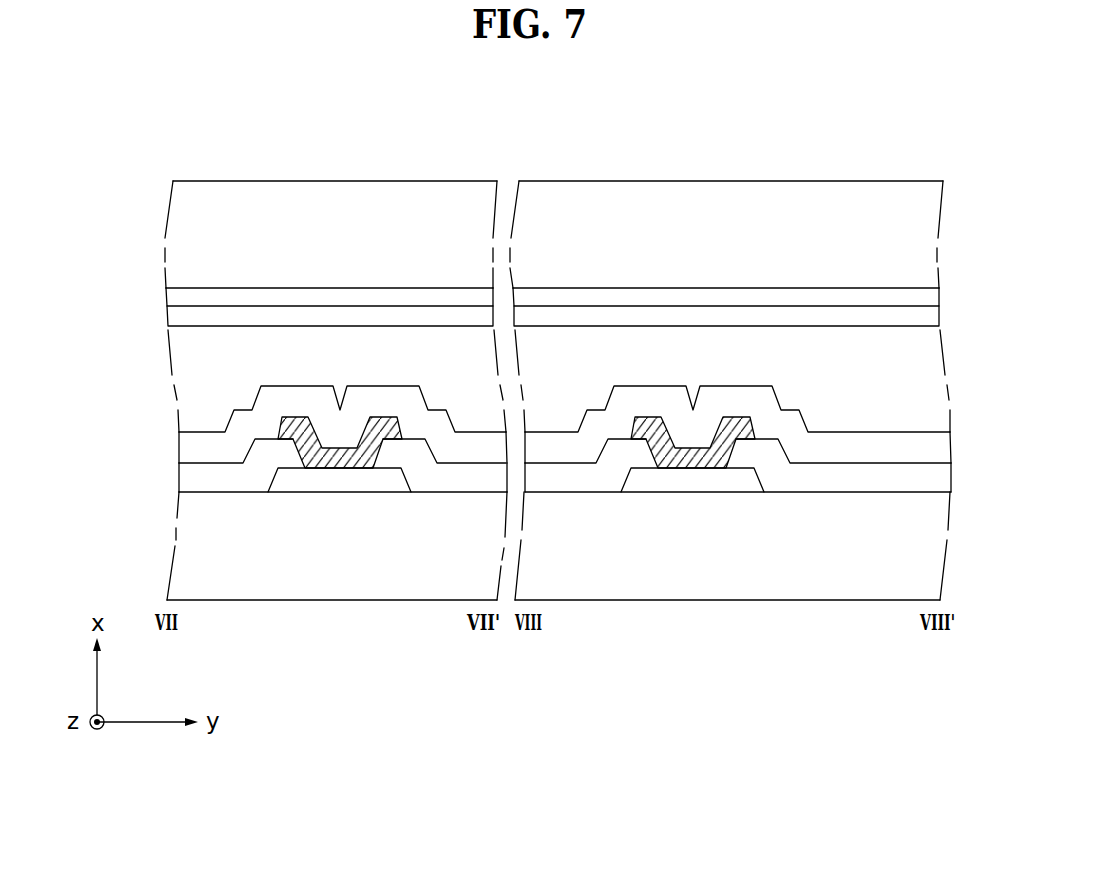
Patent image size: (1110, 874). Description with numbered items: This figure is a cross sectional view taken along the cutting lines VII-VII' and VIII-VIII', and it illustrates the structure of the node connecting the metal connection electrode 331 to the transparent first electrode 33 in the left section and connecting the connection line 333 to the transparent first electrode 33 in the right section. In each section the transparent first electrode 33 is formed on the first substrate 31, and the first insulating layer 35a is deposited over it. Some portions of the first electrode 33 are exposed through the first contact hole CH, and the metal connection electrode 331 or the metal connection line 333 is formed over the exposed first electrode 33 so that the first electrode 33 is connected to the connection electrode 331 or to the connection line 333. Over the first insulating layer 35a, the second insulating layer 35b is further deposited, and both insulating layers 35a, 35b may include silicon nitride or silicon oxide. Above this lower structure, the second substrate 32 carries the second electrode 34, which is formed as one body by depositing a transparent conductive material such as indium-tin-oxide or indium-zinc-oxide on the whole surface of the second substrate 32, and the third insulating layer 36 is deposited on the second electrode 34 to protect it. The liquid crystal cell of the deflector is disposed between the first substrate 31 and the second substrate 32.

The first substrate 31 is at (440, 590).
The second substrate 32 is at (435, 197).
The first electrode 33 is at (380, 483).
The second electrode 34 is at (385, 295).
The first insulating layer 35a is at (200, 483).
The second insulating layer 35b is at (200, 449).
The third insulating layer 36 is at (297, 313).
The metal connection electrode 331 is at (312, 465).
The connection line 333 is at (665, 465).
The first contact hole CH is at (332, 462).